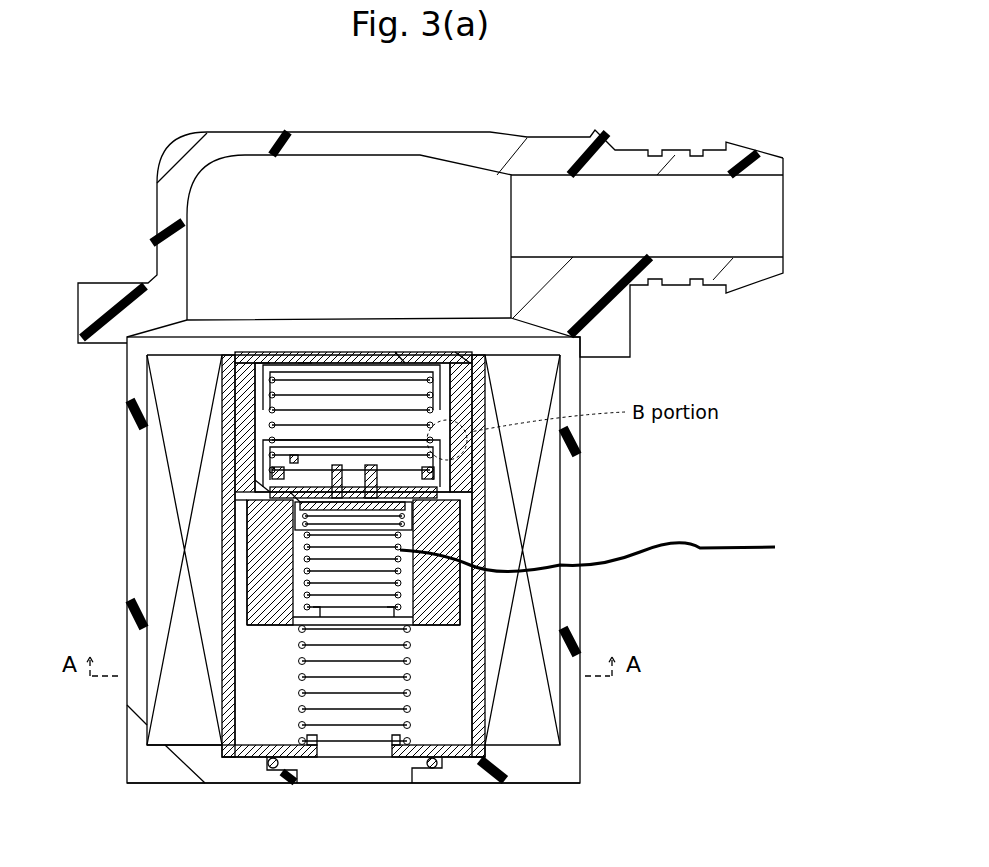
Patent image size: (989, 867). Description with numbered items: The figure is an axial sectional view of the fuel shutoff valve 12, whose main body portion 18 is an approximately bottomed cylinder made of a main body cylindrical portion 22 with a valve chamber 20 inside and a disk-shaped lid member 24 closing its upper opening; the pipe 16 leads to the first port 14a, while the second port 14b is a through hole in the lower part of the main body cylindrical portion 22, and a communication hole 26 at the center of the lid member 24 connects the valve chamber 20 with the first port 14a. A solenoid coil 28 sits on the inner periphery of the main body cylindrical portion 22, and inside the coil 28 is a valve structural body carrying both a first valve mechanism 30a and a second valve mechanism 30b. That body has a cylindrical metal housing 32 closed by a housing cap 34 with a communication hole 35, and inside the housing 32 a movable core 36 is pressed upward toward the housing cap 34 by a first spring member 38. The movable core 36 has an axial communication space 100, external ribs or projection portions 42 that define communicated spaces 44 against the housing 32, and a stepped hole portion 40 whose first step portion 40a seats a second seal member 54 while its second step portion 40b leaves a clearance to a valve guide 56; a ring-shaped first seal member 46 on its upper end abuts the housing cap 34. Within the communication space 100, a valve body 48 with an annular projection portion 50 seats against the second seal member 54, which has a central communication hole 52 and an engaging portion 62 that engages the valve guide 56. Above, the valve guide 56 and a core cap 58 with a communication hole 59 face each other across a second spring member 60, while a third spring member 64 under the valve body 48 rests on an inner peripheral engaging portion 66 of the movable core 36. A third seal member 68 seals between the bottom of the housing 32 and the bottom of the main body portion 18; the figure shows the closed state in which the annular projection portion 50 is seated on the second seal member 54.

The fuel shutoff valve 12 is at (127, 143).
The first port 14a is at (785, 268).
The second port 14b is at (412, 775).
The pipe 16 is at (272, 133).
The main body portion 18 is at (124, 691).
The valve chamber 20 is at (286, 696).
The main body cylindrical portion 22 is at (572, 605).
The lid member 24 is at (462, 360).
The communication hole 26 is at (400, 355).
The coil 28 is at (525, 730).
The first valve mechanism 30a is at (243, 552).
The second valve mechanism 30b is at (440, 492).
The housing 32 is at (175, 722).
The housing cap 34 is at (262, 365).
The communication hole 35 is at (305, 365).
The movable core 36 is at (252, 625).
The first spring member 38 is at (415, 700).
The stepped hole portion 40 is at (452, 425).
The first step portion 40a is at (297, 500).
The second step portion 40b is at (267, 480).
The projection portions 42 is at (295, 528).
The communicated space 44 is at (237, 386).
The first seal member 46 is at (243, 352).
The valve body 48 is at (415, 520).
The annular projection portion 50 is at (250, 518).
The communication hole 52 is at (378, 430).
The second seal member 54 is at (245, 460).
The valve guide 56 is at (242, 430).
The core cap 58 is at (438, 363).
The communication hole 59 is at (345, 380).
The second spring member 60 is at (455, 385).
The engaging portion 62 is at (360, 470).
The third spring member 64 is at (408, 678).
The inner peripheral engaging portion 66 is at (390, 595).
The third seal member 68 is at (445, 768).
The communication space 100 is at (614, 552).